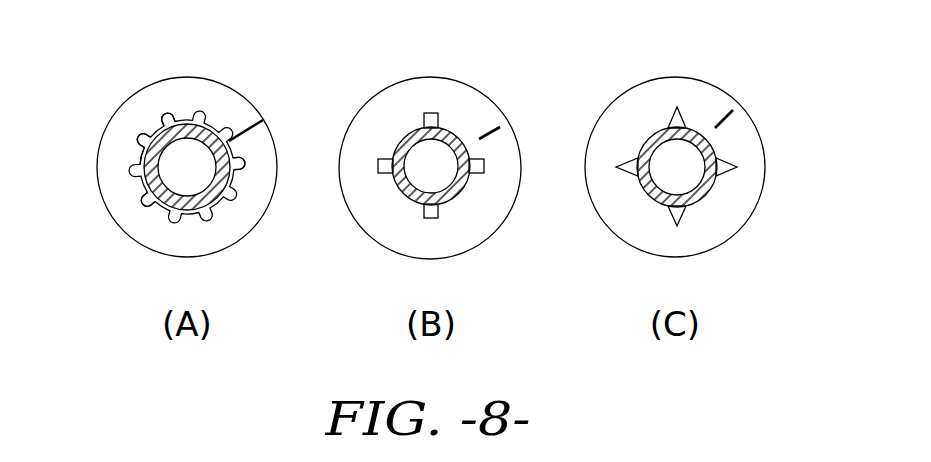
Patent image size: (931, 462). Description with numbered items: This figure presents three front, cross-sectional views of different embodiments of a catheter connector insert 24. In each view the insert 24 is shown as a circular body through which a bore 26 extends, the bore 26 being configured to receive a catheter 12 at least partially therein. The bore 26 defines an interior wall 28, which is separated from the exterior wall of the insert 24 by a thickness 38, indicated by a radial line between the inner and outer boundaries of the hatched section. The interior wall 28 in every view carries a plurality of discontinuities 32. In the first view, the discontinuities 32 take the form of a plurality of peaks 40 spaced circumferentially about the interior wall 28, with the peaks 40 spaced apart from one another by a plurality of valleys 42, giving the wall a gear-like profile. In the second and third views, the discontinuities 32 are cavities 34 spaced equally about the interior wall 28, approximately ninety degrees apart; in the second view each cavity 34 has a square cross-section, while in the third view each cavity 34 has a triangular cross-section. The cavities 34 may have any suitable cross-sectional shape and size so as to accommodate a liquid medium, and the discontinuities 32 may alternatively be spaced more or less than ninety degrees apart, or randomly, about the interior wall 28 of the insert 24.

The catheter 12 is at (231, 193).
The insert 24 is at (198, 76).
The bore 26 is at (177, 177).
The interior wall 28 is at (163, 120).
The discontinuity 32 is at (150, 200).
The cavity 34 is at (243, 175).
The thickness 38 is at (227, 142).
The peak 40 is at (140, 147).
The valley 42 is at (140, 140).